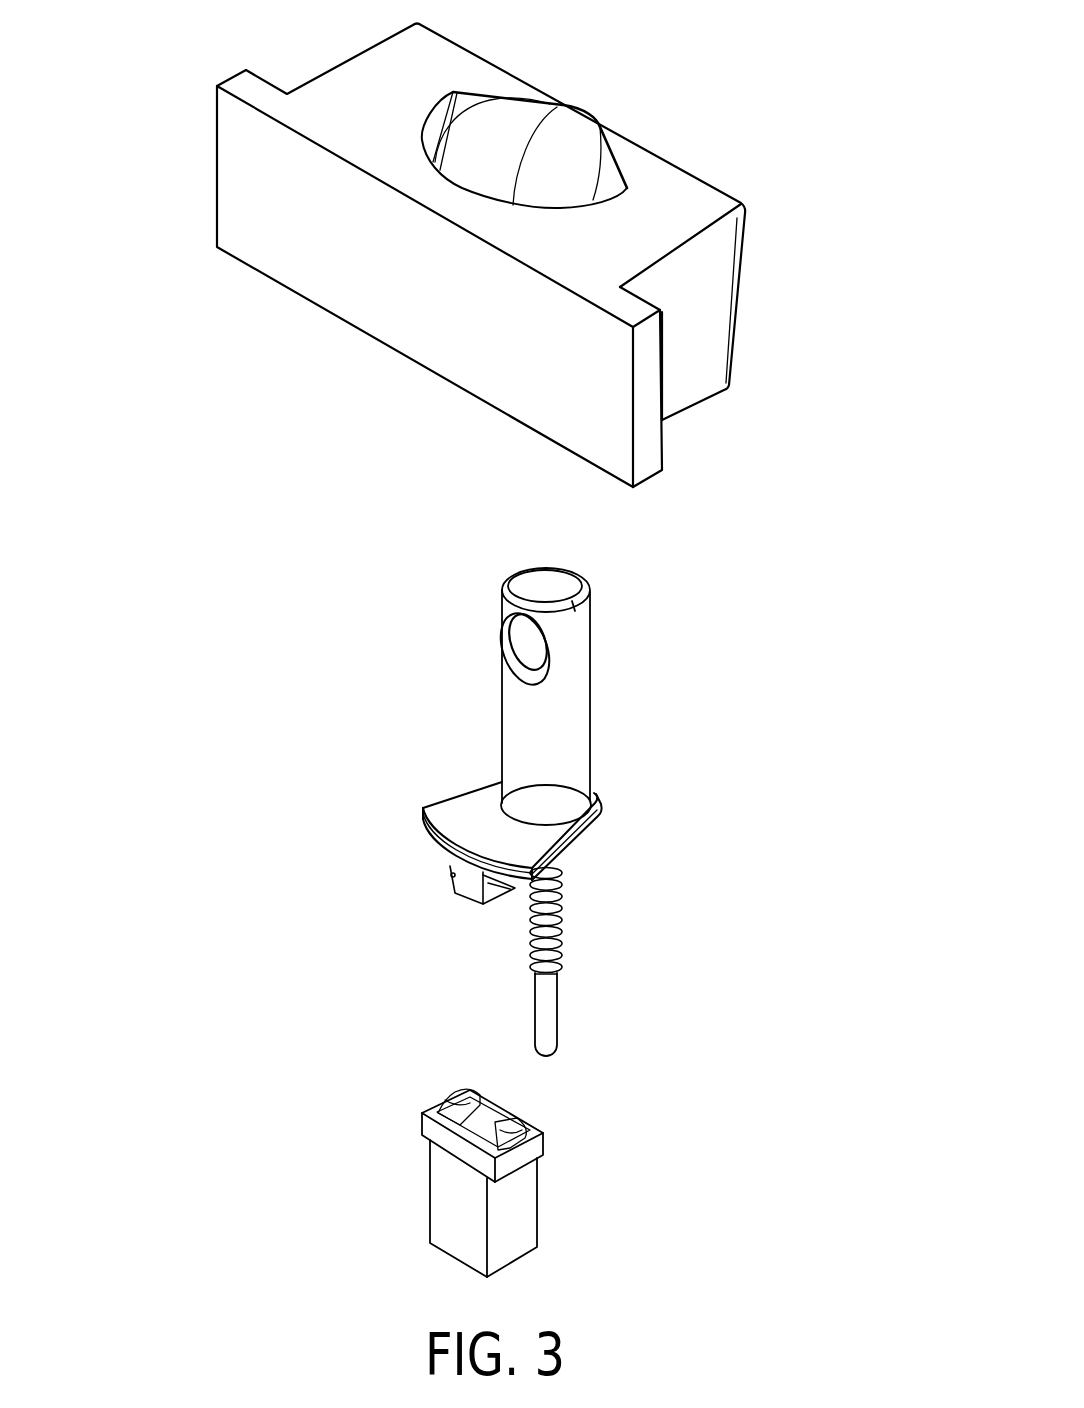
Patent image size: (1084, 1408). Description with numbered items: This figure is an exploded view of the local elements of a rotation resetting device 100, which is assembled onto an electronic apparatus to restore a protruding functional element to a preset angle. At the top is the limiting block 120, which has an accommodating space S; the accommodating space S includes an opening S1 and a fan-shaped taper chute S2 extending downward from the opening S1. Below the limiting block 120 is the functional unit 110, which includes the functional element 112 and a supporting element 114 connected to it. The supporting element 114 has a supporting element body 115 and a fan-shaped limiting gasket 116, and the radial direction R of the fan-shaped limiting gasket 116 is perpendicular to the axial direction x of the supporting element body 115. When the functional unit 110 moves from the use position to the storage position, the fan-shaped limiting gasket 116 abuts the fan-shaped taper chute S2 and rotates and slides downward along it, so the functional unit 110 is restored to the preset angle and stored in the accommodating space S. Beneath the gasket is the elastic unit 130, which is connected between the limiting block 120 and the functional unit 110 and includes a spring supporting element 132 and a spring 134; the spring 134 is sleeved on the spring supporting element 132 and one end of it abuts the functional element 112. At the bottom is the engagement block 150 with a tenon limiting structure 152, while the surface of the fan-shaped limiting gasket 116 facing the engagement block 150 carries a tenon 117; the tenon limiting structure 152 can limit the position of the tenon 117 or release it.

The rotation resetting device 100 is at (812, 45).
The limiting block 120 is at (408, 251).
The accommodating space S is at (538, 111).
The opening S1 is at (483, 88).
The fan-shaped taper chute S2 is at (444, 170).
The functional unit 110 is at (382, 741).
The functional element 112 is at (528, 643).
The supporting element 114 is at (446, 724).
The supporting element body 115 is at (520, 702).
The fan-shaped limiting gasket 116 is at (467, 822).
The tenon 117 is at (468, 878).
The elastic unit 130 is at (656, 962).
The spring supporting element 132 is at (550, 1000).
The spring 134 is at (560, 923).
The engagement block 150 is at (548, 1182).
The tenon limiting structure 152 is at (507, 1130).
The radial direction R is at (503, 785).
The axial direction x is at (552, 707).